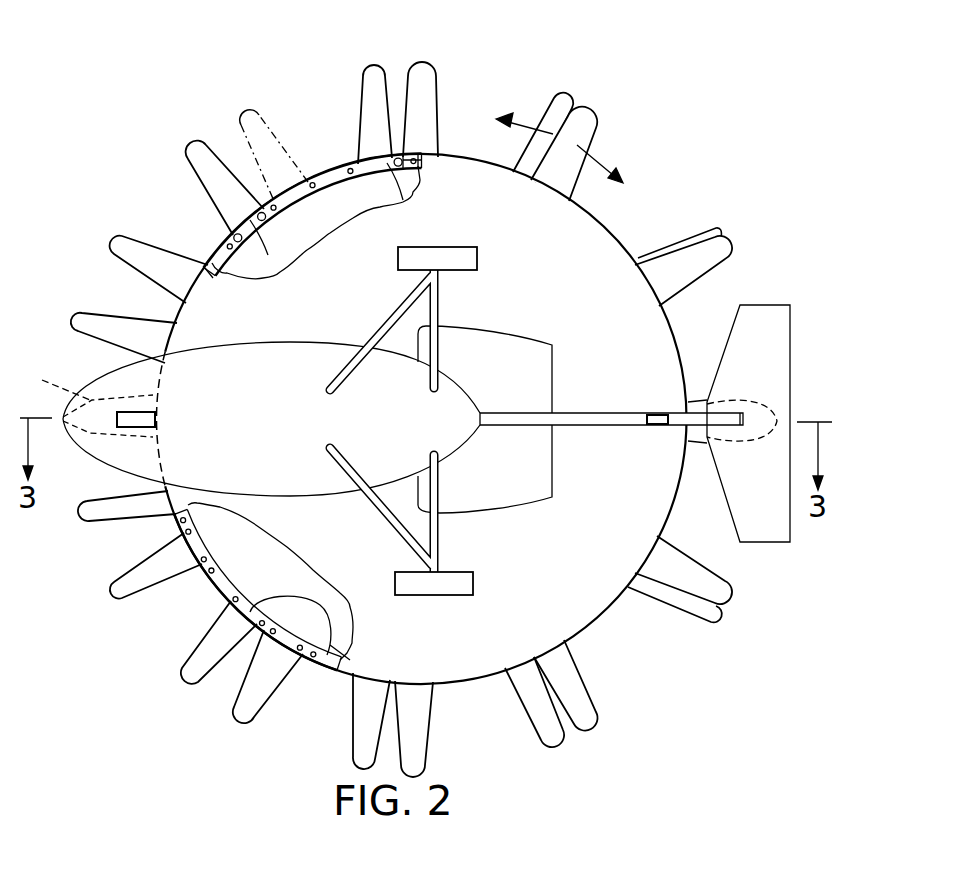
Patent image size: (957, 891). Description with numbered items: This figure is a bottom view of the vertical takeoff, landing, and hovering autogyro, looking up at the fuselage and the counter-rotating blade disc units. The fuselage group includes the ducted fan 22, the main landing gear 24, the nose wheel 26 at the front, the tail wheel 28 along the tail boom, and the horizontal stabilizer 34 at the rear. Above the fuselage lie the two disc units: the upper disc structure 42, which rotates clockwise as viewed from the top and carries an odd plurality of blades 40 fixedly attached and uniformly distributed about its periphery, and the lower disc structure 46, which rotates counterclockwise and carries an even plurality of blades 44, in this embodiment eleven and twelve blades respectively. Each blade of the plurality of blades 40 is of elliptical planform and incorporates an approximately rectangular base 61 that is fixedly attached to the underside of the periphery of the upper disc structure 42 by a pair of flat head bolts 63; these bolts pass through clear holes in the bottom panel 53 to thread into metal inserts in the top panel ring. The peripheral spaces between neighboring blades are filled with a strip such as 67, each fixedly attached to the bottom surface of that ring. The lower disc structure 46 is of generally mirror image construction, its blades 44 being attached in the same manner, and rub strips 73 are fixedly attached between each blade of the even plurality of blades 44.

The ducted fan 22 is at (552, 345).
The main landing gear 24 is at (460, 252).
The nose wheel 26 is at (140, 418).
The tail wheel 28 is at (657, 427).
The horizontal stabilizer 34 is at (783, 338).
The blades 40 is at (368, 80).
The upper disc structure 42 is at (283, 152).
The blades 44 is at (425, 78).
The lower disc structure 46 is at (599, 240).
The bottom panel 53 is at (312, 237).
The rectangular base 61 is at (410, 168).
The flat head bolts 63 is at (398, 162).
The strip 67 is at (422, 163).
The rub strips 73 is at (270, 581).